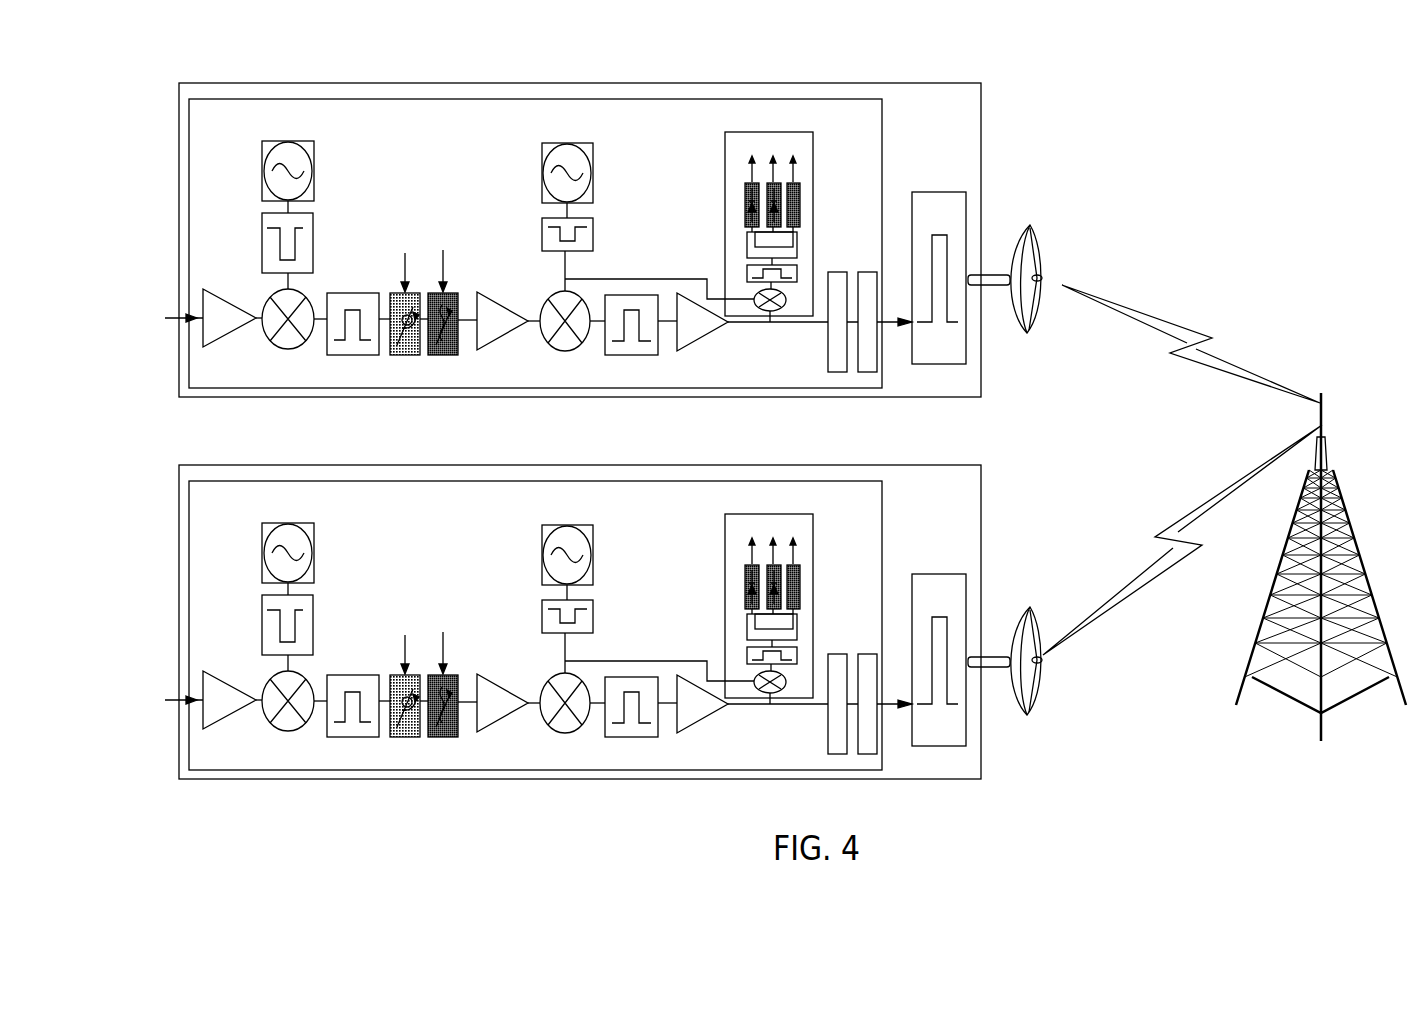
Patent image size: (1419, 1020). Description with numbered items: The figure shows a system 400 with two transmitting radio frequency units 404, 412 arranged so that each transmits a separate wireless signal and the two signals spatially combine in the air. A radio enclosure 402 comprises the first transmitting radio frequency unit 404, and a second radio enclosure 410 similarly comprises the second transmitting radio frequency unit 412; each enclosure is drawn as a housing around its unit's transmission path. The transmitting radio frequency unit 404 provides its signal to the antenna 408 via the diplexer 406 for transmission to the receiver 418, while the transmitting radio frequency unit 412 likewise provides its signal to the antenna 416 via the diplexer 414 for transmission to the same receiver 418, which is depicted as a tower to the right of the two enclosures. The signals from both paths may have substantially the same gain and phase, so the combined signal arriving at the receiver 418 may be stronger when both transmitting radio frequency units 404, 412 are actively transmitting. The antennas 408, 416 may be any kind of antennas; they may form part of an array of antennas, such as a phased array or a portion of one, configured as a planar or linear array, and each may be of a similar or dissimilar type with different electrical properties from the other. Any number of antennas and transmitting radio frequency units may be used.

The system 400 is at (1079, 158).
The radio enclosure 402 is at (340, 83).
The transmitting radio frequency unit 404 is at (458, 99).
The diplexer 406 is at (939, 192).
The antenna 408 is at (1029, 223).
The radio enclosure 410 is at (573, 594).
The transmitting radio frequency unit 412 is at (538, 597).
The diplexer 414 is at (939, 633).
The antenna 416 is at (1010, 631).
The receiver 418 is at (1331, 473).